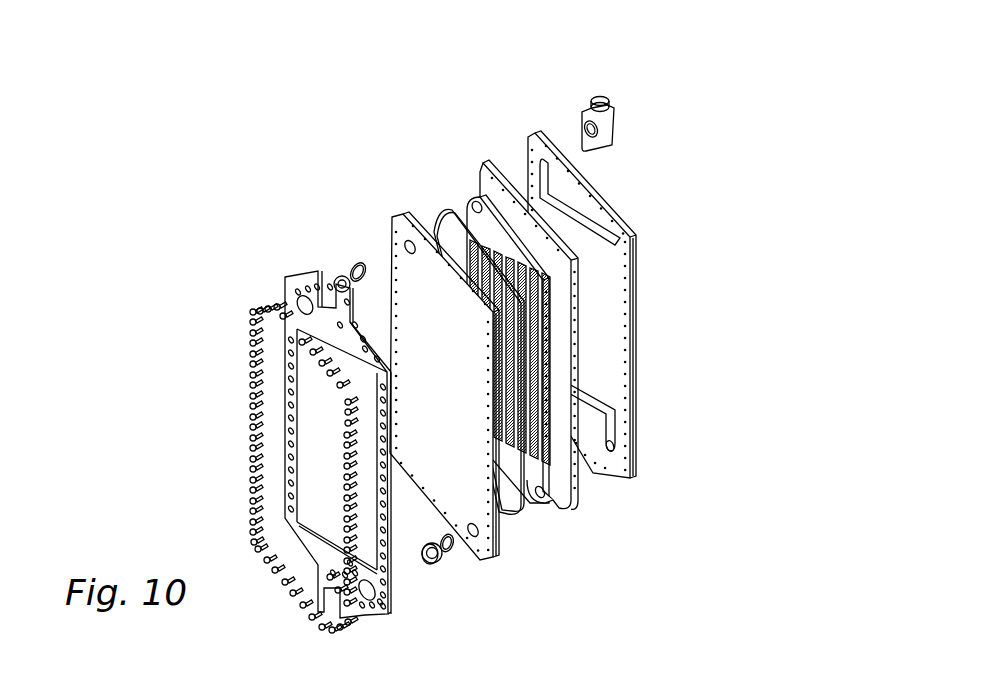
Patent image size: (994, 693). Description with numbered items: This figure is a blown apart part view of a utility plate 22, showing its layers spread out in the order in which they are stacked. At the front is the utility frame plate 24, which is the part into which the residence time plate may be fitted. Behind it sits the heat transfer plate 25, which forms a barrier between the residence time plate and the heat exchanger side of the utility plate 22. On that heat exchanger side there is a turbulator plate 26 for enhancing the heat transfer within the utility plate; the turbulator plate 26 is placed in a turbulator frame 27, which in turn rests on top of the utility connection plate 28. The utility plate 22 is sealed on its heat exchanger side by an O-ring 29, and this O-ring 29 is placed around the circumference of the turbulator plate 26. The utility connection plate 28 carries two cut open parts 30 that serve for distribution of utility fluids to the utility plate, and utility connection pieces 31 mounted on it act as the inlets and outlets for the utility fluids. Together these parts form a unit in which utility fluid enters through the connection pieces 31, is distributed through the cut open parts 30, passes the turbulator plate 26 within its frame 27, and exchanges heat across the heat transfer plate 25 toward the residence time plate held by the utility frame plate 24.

The utility plate 22 is at (682, 247).
The utility frame plate 24 is at (317, 269).
The heat transfer plate 25 is at (391, 214).
The turbulator plate 26 is at (466, 196).
The turbulator frame 27 is at (478, 168).
The utility connection plate 28 is at (527, 136).
The O-ring 29 is at (524, 518).
The cut open parts 30 is at (615, 426).
The utility connection pieces 31 is at (579, 106).